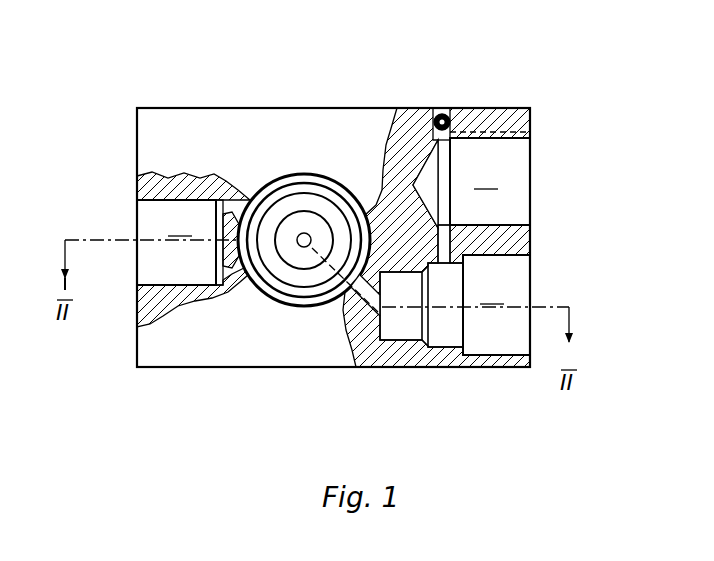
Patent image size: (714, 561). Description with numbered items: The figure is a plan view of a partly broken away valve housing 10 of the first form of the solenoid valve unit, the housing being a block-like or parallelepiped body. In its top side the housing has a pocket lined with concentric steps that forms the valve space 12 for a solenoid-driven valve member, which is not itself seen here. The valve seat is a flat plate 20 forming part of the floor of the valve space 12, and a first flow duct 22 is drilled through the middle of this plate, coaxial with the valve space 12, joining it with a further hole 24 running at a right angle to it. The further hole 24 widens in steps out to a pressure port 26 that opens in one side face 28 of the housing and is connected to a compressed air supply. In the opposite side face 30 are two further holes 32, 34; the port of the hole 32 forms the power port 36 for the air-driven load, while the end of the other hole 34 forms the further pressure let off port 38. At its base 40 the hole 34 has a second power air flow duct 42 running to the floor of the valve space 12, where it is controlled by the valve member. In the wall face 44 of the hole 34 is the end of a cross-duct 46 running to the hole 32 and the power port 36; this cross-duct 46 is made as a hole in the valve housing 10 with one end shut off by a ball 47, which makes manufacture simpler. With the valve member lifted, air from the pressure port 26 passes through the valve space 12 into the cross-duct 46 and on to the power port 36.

The valve housing 10 is at (506, 106).
The valve space 12 is at (320, 203).
The plate 20 is at (283, 225).
The first flow duct 22 is at (303, 235).
The further hole 24 is at (176, 242).
The pressure port 26 is at (134, 214).
The side face 28 is at (137, 138).
The side face 30 is at (532, 125).
The hole 32 is at (471, 183).
The hole 34 is at (496, 305).
The power port 36 is at (534, 176).
The further pressure let off port 38 is at (534, 284).
The base 40 is at (374, 325).
The second power air flow duct 42 is at (362, 288).
The wall face 44 is at (432, 355).
The cross-duct 46 is at (446, 247).
The ball 47 is at (441, 113).